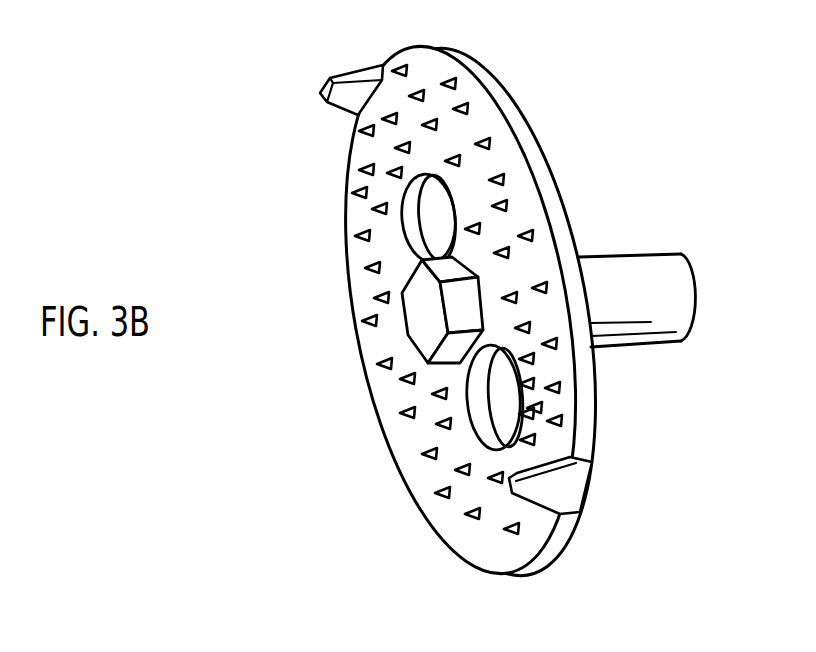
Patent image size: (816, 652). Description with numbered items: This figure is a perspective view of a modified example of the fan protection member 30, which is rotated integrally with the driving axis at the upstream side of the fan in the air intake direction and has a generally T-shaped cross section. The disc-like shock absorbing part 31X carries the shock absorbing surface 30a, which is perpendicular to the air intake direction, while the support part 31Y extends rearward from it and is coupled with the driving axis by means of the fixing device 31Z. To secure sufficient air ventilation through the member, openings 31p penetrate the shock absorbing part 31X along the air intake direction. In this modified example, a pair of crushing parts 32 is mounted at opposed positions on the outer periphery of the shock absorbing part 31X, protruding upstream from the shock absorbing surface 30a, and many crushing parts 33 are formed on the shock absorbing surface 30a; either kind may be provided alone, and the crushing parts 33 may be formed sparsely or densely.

The fan protection member 30 is at (472, 319).
The shock absorbing surface 30a is at (407, 400).
The shock absorbing part 31X is at (549, 188).
The support part 31Y is at (650, 268).
The fixing device 31Z is at (418, 328).
The opening 31p is at (411, 220).
The crushing part 32 is at (345, 72).
The crushing part 33 is at (369, 320).